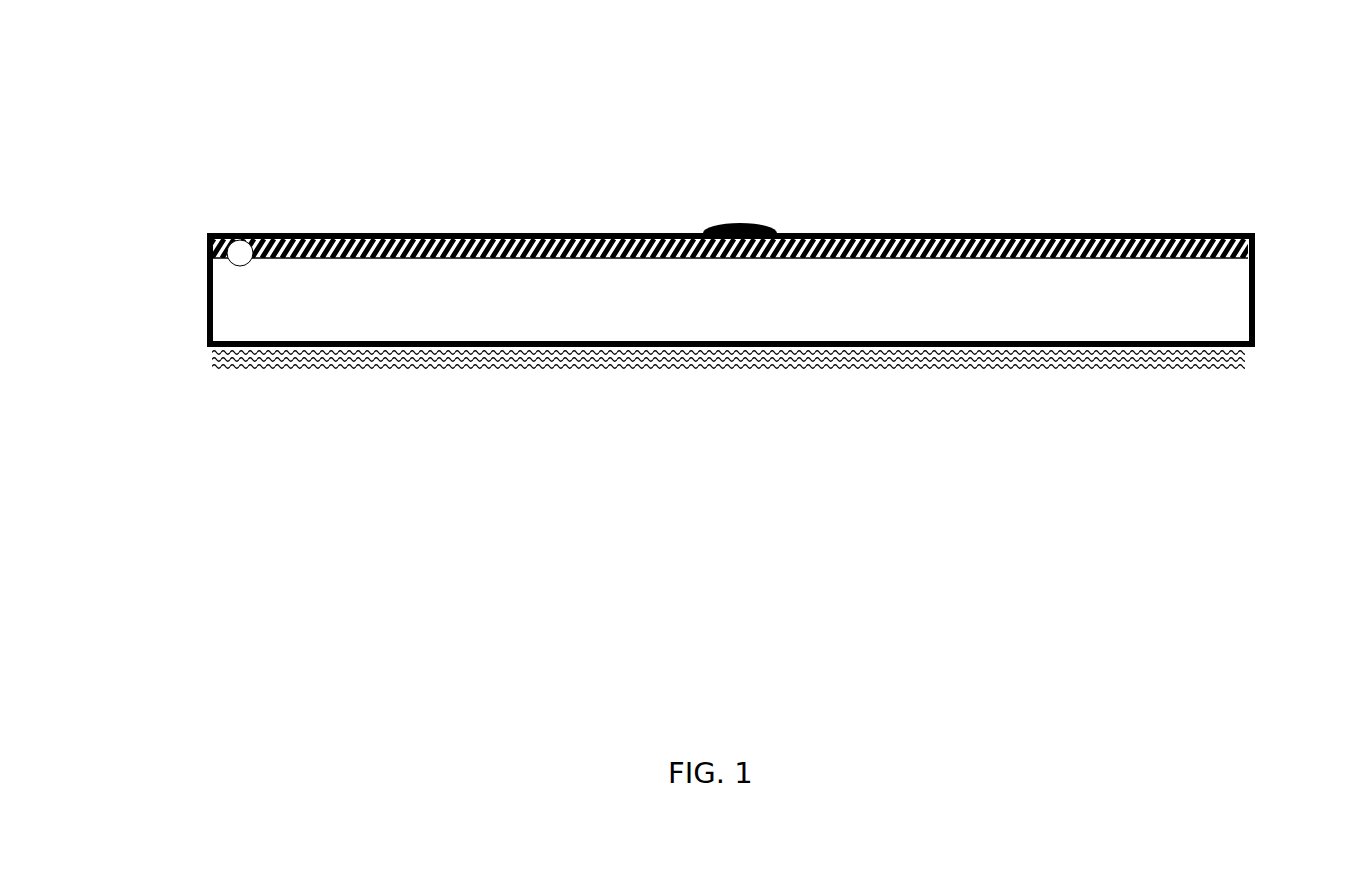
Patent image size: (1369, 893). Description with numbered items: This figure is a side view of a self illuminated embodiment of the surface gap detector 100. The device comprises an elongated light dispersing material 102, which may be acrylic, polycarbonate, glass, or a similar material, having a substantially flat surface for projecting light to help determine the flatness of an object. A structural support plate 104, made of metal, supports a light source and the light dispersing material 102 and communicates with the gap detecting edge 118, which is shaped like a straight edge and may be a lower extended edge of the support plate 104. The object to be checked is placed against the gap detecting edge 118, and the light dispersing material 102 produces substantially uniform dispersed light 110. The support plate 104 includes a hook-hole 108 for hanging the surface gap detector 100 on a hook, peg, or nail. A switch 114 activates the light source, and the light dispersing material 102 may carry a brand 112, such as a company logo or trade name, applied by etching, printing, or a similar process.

The surface gap detector 100 is at (158, 285).
The elongated light dispersing material 102 is at (993, 332).
The structural support plate 104 is at (1262, 232).
The hook-hole 108 is at (242, 247).
The dispersed light 110 is at (1262, 353).
The brand 112 is at (710, 307).
The switch 114 is at (741, 215).
The gap detecting edge 118 is at (337, 345).